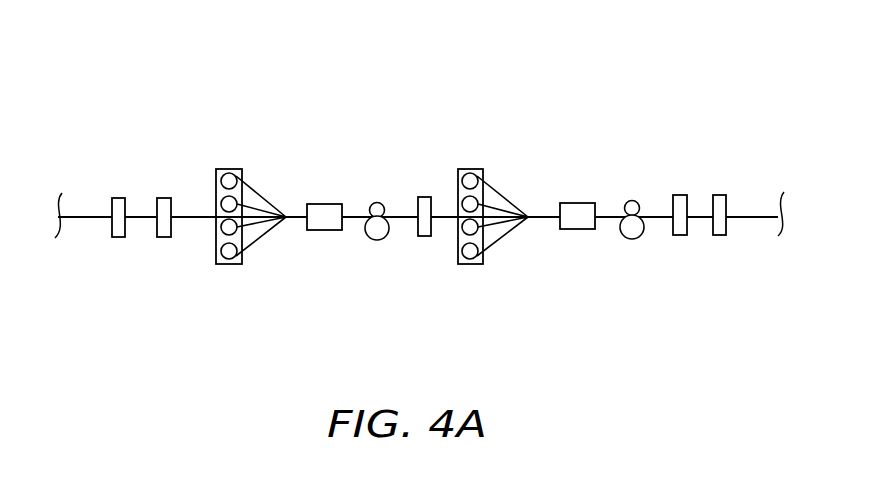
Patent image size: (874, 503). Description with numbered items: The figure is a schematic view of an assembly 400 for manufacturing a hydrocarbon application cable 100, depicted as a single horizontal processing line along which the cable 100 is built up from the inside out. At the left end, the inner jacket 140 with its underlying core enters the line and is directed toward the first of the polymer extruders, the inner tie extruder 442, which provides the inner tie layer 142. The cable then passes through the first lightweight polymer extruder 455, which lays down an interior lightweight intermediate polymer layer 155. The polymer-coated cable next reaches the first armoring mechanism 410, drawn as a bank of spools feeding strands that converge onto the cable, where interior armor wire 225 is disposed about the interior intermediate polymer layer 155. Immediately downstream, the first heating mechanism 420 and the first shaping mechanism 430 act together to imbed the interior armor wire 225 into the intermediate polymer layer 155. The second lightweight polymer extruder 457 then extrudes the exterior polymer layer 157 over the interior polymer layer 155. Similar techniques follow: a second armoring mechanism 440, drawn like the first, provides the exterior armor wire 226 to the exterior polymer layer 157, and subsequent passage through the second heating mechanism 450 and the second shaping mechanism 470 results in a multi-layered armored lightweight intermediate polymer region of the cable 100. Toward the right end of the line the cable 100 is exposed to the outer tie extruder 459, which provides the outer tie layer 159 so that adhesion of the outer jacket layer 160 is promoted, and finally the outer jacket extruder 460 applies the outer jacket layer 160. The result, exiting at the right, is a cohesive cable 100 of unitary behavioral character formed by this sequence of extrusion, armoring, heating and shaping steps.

The assembly 400 is at (146, 47).
The hydrocarbon application cable 100 is at (756, 198).
The inner jacket 140 is at (83, 220).
The inner tie layer 142 is at (143, 220).
The interior lightweight intermediate polymer layer 155 is at (190, 220).
The exterior polymer layer 157 is at (446, 220).
The outer tie layer 159 is at (697, 215).
The outer jacket layer 160 is at (748, 219).
The interior armor wire 225 is at (262, 196).
The exterior armor wire 226 is at (507, 195).
The first armoring mechanism 410 is at (232, 270).
The first heating mechanism 420 is at (325, 230).
The first shaping mechanism 430 is at (377, 243).
The second armoring mechanism 440 is at (475, 148).
The inner tie extruder 442 is at (118, 198).
The second heating mechanism 450 is at (578, 229).
The first lightweight polymer extruder 455 is at (165, 198).
The second lightweight polymer extruder 457 is at (423, 198).
The outer tie extruder 459 is at (681, 236).
The outer jacket extruder 460 is at (719, 236).
The second shaping mechanism 470 is at (634, 199).